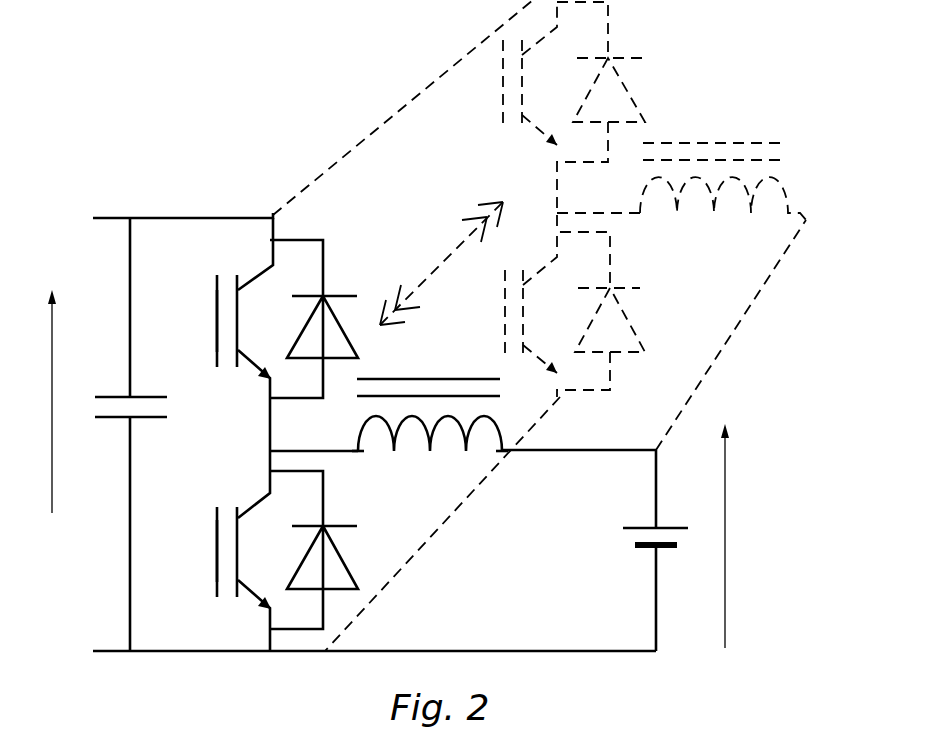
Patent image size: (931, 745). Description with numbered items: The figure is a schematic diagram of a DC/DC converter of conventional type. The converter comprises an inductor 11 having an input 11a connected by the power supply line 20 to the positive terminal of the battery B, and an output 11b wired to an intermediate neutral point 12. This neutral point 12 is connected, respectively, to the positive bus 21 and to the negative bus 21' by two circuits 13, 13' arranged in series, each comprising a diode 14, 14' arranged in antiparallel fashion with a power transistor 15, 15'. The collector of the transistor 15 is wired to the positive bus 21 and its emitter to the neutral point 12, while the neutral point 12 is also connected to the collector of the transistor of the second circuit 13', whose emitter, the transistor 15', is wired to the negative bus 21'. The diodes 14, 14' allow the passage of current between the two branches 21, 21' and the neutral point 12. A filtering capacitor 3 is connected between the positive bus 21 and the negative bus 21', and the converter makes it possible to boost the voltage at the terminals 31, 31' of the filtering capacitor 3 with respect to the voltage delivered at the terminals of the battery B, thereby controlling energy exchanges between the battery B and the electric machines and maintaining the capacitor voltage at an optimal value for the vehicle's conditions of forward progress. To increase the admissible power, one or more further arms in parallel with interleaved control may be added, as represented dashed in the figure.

The positive bus 21 is at (183, 188).
The negative bus 21' is at (374, 685).
The terminal of the filtering capacitor 31 is at (106, 242).
The terminal of the filtering capacitor 31' is at (101, 629).
The filtering capacitor 3 is at (130, 395).
The circuit 13 is at (208, 308).
The power transistor 15 is at (193, 328).
The diode 14 is at (345, 319).
The intermediate neutral point 12 is at (270, 451).
The circuit 13' is at (205, 561).
The power transistor 15' is at (191, 557).
The diode 14' is at (340, 550).
The inductor 11 is at (449, 466).
The input of the inductor 11a is at (503, 454).
The output of the inductor 11b is at (360, 454).
The power supply line 20 is at (620, 449).
The battery B is at (656, 528).